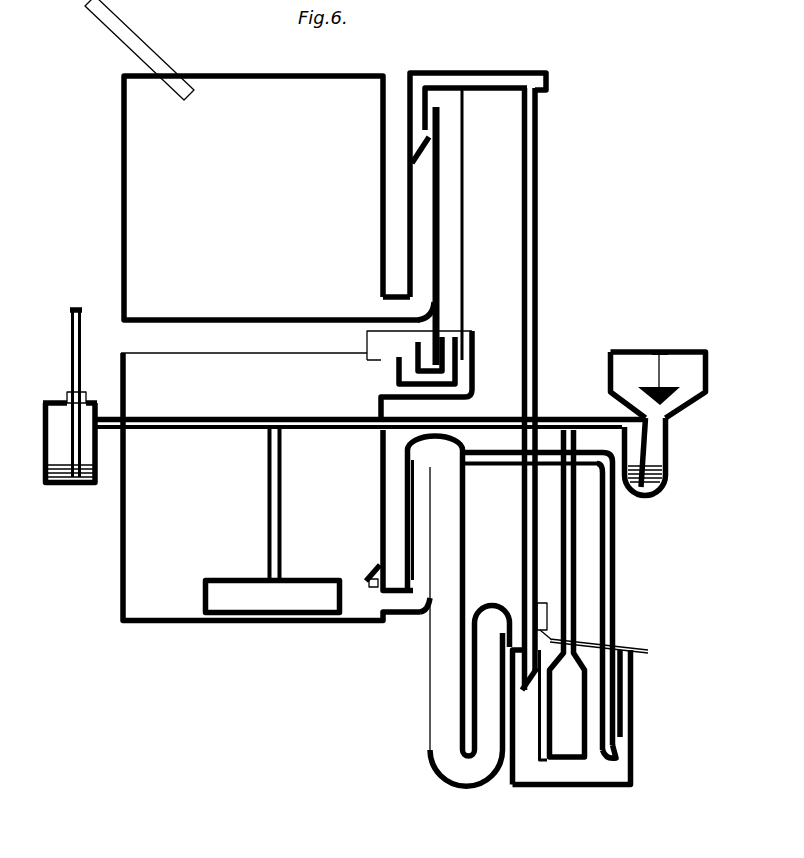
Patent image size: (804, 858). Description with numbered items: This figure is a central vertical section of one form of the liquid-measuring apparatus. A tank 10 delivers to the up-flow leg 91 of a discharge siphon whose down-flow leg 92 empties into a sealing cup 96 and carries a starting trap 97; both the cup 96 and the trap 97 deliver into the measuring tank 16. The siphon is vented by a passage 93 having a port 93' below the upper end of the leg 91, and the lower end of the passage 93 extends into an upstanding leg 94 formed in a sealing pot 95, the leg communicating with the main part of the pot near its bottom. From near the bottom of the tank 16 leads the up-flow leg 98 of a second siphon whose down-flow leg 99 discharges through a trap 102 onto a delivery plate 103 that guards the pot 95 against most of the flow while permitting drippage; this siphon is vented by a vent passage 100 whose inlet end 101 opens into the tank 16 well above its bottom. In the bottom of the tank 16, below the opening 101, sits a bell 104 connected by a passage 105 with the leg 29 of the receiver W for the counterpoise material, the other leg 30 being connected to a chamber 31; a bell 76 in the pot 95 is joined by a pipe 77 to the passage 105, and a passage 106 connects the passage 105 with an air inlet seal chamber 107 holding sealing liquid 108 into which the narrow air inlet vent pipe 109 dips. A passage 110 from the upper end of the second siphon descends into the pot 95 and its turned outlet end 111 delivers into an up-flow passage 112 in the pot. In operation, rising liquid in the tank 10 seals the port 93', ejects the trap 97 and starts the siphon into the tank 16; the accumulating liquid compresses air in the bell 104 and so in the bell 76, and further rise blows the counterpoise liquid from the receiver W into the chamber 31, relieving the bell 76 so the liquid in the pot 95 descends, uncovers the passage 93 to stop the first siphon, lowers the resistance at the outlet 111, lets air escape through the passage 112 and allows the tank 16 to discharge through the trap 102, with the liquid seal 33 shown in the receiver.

The tank 10 is at (122, 118).
The measuring tank 16 is at (118, 583).
The leg of receiver 29 is at (645, 448).
The leg of receiver 30 is at (666, 458).
The chamber 31 is at (700, 373).
The liquid seal 33 is at (664, 476).
The receiver W is at (660, 492).
The bell 76 is at (567, 593).
The pipe 77 is at (613, 567).
The up-flow leg 91 is at (418, 250).
The down-flow leg 92 is at (464, 229).
The passage 93 is at (499, 360).
The port 93' is at (468, 236).
The upstanding leg 94 is at (525, 745).
The sealing pot 95 is at (582, 788).
The sealing cup 96 is at (436, 333).
The starting trap 97 is at (460, 363).
The up-flow leg 98 is at (410, 517).
The down-flow leg 99 is at (445, 608).
The vent passage 100 is at (403, 483).
The inlet end 101 is at (365, 576).
The trap 102 is at (453, 772).
The delivery plate 103 is at (632, 636).
The bell 104 is at (234, 578).
The passage 105 is at (267, 478).
The passage 106 is at (204, 417).
The air inlet seal chamber 107 is at (55, 437).
The sealing liquid 108 is at (55, 486).
The air inlet vent pipe 109 is at (71, 350).
The passage 110 is at (497, 462).
The outlet end 111 is at (615, 752).
The up-flow passage 112 is at (623, 713).